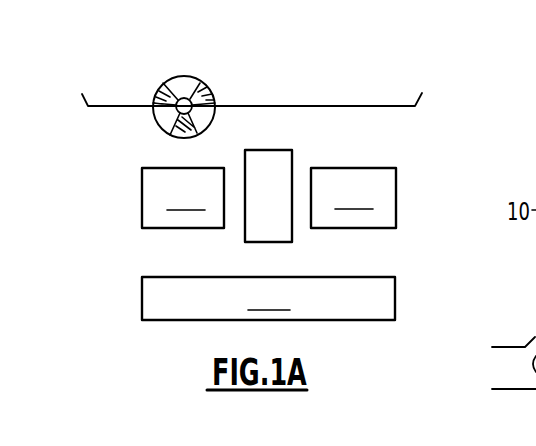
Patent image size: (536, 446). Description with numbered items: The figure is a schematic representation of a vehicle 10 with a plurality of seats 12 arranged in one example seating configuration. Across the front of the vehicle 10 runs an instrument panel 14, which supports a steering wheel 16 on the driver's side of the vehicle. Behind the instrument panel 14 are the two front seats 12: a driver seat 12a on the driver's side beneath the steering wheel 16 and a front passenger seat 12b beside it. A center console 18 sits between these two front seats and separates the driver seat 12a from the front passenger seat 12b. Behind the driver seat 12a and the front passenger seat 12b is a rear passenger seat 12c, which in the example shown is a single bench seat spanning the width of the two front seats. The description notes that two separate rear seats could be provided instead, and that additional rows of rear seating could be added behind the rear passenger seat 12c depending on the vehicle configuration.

The vehicle 10 is at (464, 108).
The seats 12 is at (142, 198).
The driver seat 12a is at (183, 198).
The front passenger seat 12b is at (353, 198).
The rear passenger seat 12c is at (268, 298).
The instrument panel 14 is at (352, 107).
The steering wheel 16 is at (188, 76).
The center console 18 is at (268, 168).